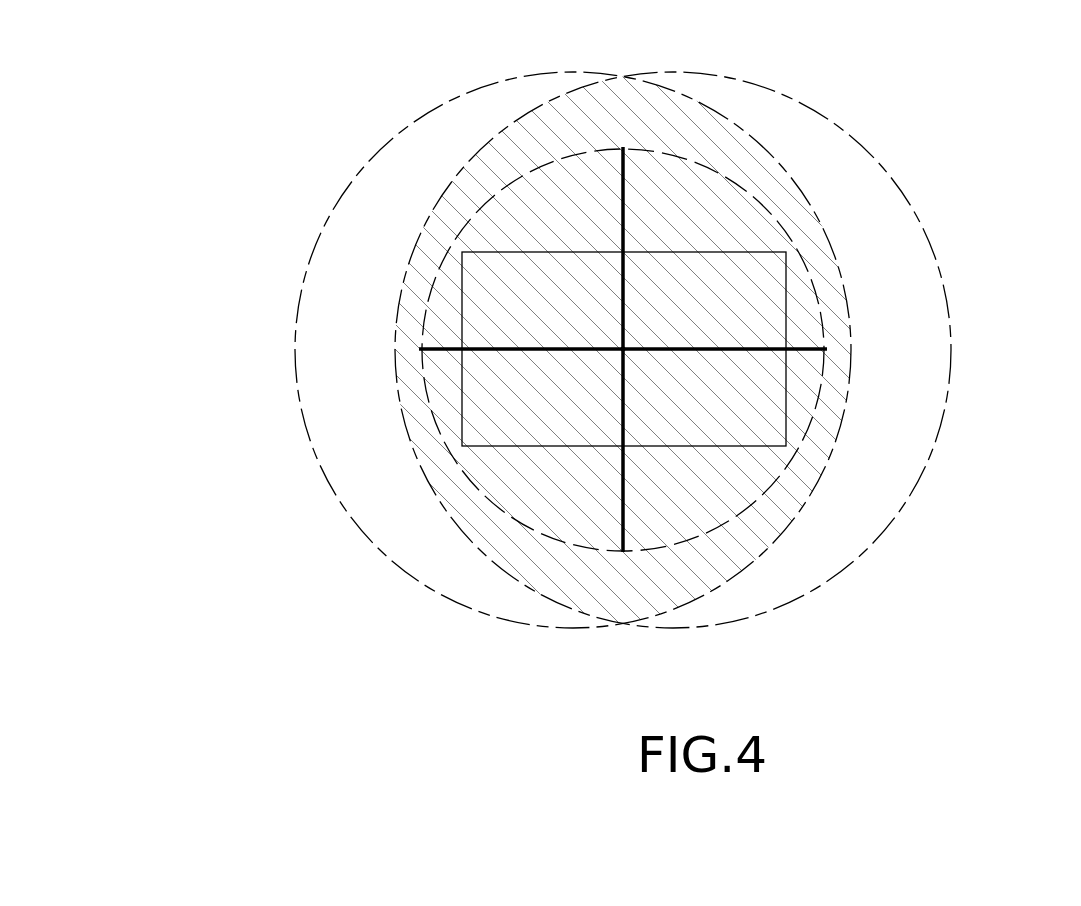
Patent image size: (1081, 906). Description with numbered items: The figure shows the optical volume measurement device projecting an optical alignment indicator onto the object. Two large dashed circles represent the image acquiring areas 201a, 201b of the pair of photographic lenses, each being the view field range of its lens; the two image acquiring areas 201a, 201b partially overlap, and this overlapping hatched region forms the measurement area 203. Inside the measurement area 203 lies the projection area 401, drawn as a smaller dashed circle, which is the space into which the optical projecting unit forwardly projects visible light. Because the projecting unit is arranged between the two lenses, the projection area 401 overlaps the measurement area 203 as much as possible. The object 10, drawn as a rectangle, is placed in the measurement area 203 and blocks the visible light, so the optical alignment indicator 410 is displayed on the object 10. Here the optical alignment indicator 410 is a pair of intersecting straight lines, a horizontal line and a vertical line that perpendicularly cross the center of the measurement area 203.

The image acquiring area 201a is at (865, 150).
The image acquiring area 201b is at (350, 183).
The projection area 401 is at (722, 168).
The measurement area 203 is at (646, 129).
The optical alignment indicator 410 is at (636, 290).
The object 10 is at (775, 405).